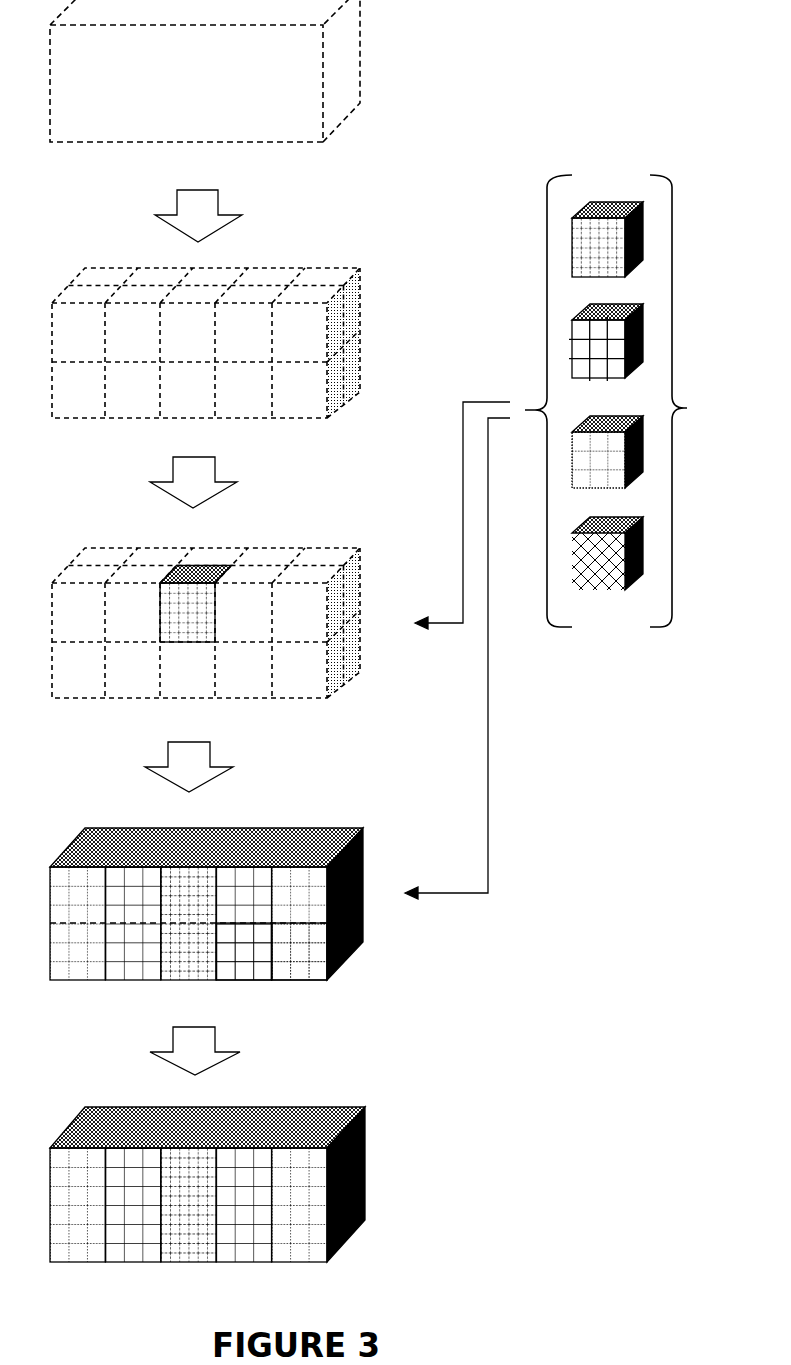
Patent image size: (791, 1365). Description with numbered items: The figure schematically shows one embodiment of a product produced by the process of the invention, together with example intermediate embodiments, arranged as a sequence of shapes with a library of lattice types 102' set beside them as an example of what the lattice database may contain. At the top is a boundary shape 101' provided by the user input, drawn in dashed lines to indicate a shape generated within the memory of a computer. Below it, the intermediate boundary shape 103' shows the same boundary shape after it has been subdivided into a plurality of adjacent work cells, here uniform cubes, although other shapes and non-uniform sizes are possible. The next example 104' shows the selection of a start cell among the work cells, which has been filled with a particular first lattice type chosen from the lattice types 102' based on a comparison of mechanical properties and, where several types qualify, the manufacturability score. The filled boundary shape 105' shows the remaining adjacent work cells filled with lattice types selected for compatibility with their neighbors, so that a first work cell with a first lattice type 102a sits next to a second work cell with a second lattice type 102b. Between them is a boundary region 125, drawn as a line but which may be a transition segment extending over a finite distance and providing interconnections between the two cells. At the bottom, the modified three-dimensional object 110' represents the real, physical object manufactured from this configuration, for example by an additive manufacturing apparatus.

The boundary shape 101' is at (250, 71).
The lattice types 102' is at (575, 537).
The intermediate boundary shape 103' is at (250, 343).
The start cell selection example 104' is at (242, 623).
The filled boundary shape 105' is at (242, 950).
The fabricated object 110' is at (247, 1184).
The first lattice type 102a is at (243, 958).
The second lattice type 102b is at (303, 958).
The boundary region 125 is at (273, 957).